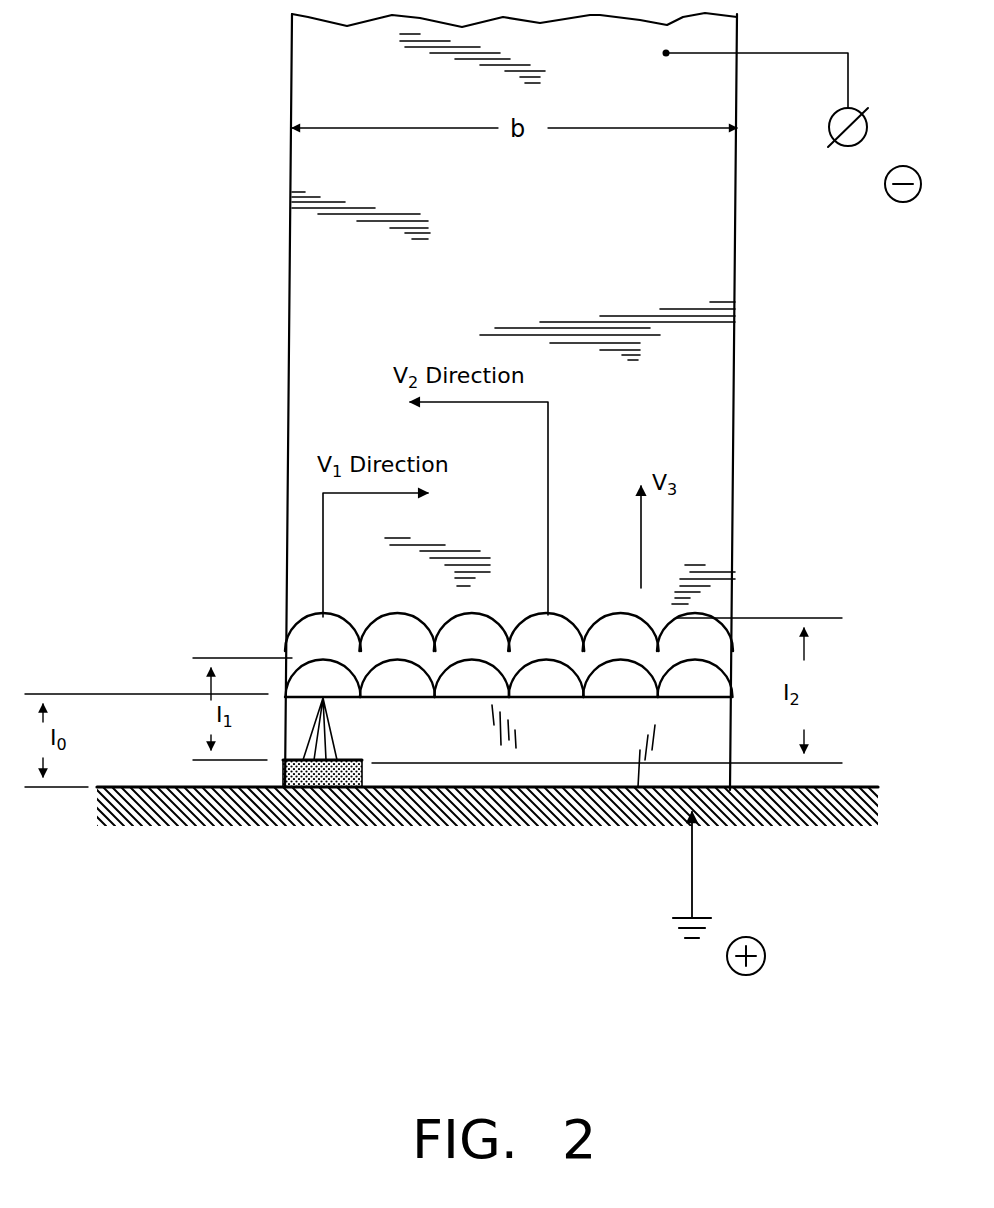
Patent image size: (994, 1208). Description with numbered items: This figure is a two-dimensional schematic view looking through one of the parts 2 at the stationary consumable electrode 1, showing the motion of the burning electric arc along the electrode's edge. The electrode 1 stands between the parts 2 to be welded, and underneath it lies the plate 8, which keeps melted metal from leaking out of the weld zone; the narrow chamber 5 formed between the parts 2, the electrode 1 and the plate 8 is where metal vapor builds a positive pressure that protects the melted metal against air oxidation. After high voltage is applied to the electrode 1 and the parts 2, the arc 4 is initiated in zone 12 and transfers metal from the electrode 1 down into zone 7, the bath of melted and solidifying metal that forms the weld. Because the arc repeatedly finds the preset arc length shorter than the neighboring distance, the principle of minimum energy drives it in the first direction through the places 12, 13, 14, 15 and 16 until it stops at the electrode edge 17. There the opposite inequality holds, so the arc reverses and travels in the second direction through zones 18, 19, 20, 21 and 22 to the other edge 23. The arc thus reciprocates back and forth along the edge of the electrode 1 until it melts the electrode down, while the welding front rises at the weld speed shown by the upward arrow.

The stationary insulated consumable electrode 1 is at (362, 95).
The parts to be welded 2 is at (475, 738).
The arc 4 is at (322, 736).
The chamber 5 is at (712, 726).
The zone of melted and solidifying metal 7 is at (320, 788).
The plate 8 is at (785, 810).
The arc initiation zone 12 is at (323, 678).
The arc position zone 13 is at (397, 678).
The arc position zone 14 is at (471, 678).
The arc position zone 15 is at (546, 678).
The arc position zone 16 is at (620, 678).
The electrode edge 17 is at (695, 678).
The arc position zone 18 is at (695, 634).
The arc position zone 19 is at (621, 634).
The arc position zone 20 is at (546, 634).
The arc position zone 21 is at (472, 634).
The arc position zone 22 is at (397, 634).
The other electrode edge 23 is at (323, 634).